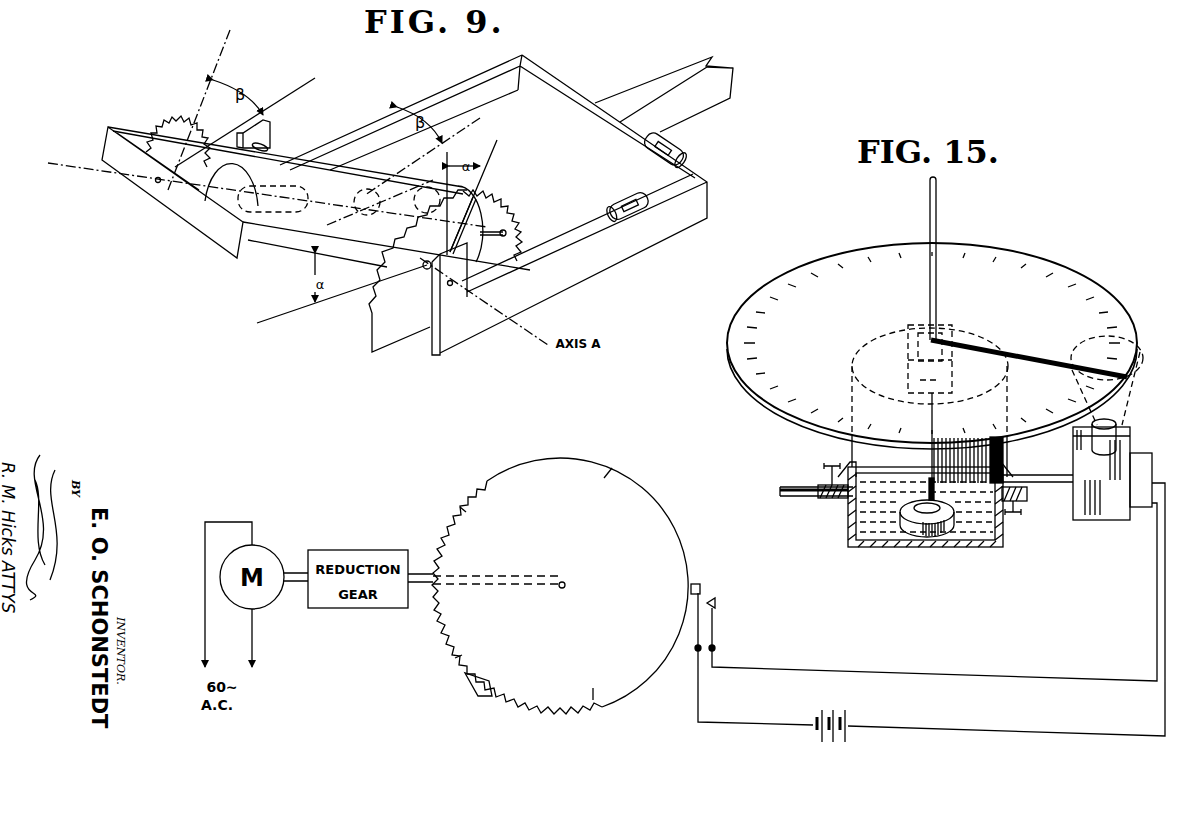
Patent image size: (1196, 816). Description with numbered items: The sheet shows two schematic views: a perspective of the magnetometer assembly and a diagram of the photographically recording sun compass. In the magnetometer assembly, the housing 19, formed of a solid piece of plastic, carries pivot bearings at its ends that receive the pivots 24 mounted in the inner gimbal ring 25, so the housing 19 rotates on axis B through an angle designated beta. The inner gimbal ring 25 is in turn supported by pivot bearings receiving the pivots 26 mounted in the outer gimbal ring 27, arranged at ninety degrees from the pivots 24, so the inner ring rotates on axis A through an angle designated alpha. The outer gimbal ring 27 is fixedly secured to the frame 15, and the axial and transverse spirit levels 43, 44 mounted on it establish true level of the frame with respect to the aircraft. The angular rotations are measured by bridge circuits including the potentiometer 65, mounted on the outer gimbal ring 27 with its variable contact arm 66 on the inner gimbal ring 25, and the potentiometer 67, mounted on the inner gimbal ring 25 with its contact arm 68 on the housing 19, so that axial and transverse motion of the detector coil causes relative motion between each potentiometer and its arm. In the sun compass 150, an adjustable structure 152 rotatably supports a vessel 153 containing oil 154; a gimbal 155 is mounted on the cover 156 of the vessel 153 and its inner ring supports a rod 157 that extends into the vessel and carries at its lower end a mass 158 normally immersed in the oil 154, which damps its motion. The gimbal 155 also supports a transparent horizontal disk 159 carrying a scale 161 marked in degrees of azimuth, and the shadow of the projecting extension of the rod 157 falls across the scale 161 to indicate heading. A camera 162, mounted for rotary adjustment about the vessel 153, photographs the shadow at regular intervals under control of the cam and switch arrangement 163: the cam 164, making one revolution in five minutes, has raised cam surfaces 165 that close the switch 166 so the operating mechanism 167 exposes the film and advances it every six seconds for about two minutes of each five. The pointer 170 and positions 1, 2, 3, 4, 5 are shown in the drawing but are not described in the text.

In FIG. 9, the frame 15 is at (707, 104).
In FIG. 9, the housing 19 is at (280, 163).
In FIG. 9, the pivots 24 is at (157, 183).
In FIG. 9, the inner gimbal ring 25 is at (118, 125).
In FIG. 9, the pivots 26 is at (450, 286).
In FIG. 9, the outer gimbal ring 27 is at (613, 257).
In FIG. 9, the axial spirit level 43 is at (622, 206).
In FIG. 9, the transverse spirit level 44 is at (675, 144).
In FIG. 9, the potentiometer 65 is at (367, 313).
In FIG. 9, the variable contact arm 66 is at (495, 205).
In FIG. 9, the potentiometer 67 is at (177, 115).
In FIG. 9, the contact arm 68 is at (255, 192).
In FIG. 15, the compass 150 is at (925, 518).
In FIG. 15, the adjustable structure 152 is at (790, 482).
In FIG. 15, the vessel 153 is at (990, 547).
In FIG. 15, the oil 154 is at (988, 520).
In FIG. 15, the gimbal 155 is at (908, 337).
In FIG. 15, the cover 156 is at (867, 350).
In FIG. 15, the rod 157 is at (940, 218).
In FIG. 15, the mass 158 is at (933, 537).
In FIG. 15, the horizontal disk 159 is at (790, 413).
In FIG. 15, the scale 161 is at (852, 270).
In FIG. 15, the camera 162 is at (1077, 520).
In FIG. 15, the cam and switch arrangement 163 is at (703, 578).
In FIG. 15, the cam 164 is at (645, 675).
In FIG. 15, the raised cam surfaces 165 is at (470, 693).
In FIG. 15, the switch 166 is at (715, 622).
In FIG. 15, the operating mechanism 167 is at (1137, 443).
In FIG. 15, the pointer 170 is at (1030, 353).
In FIG. 15, the cam position 1 is at (593, 697).
In FIG. 15, the cam position 2 is at (464, 649).
In FIG. 15, the cam position 3 is at (468, 515).
In FIG. 15, the cam position 4 is at (604, 479).
In FIG. 15, the contact 5 is at (691, 588).